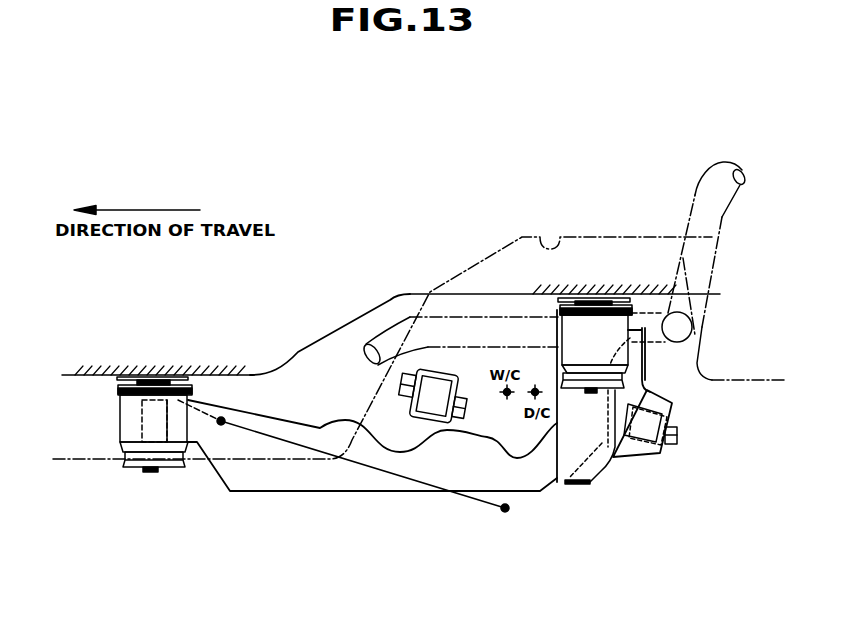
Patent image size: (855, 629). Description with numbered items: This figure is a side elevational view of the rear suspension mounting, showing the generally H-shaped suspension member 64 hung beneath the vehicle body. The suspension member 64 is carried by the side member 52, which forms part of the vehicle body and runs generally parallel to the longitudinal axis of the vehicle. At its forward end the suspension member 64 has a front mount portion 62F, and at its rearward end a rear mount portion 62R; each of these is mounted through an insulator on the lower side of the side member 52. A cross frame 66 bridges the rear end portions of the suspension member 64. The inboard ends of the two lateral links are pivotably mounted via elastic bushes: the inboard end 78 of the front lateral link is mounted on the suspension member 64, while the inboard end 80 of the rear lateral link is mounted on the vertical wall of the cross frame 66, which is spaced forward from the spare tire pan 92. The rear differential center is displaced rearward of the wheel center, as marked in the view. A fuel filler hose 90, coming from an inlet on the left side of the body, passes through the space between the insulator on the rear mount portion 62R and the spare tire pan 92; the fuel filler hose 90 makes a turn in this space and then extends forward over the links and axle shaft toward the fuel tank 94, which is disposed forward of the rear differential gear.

The side member 52 is at (296, 352).
The front mount portion 62F is at (120, 411).
The rear mount portion 62R is at (570, 335).
The suspension member 64 is at (299, 492).
The cross frame 66 is at (647, 363).
The inboard end of front lateral link 78 is at (438, 408).
The inboard end of rear lateral link 80 is at (650, 458).
The fuel filler hose 90 is at (383, 332).
The spare tire pan 92 is at (740, 383).
The fuel tank 94 is at (558, 240).